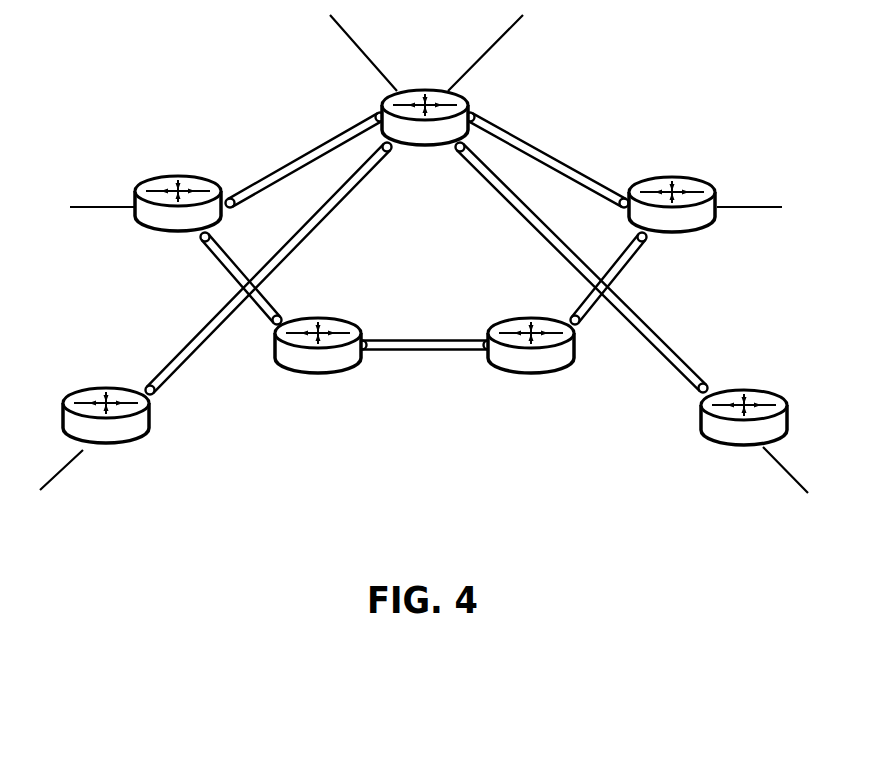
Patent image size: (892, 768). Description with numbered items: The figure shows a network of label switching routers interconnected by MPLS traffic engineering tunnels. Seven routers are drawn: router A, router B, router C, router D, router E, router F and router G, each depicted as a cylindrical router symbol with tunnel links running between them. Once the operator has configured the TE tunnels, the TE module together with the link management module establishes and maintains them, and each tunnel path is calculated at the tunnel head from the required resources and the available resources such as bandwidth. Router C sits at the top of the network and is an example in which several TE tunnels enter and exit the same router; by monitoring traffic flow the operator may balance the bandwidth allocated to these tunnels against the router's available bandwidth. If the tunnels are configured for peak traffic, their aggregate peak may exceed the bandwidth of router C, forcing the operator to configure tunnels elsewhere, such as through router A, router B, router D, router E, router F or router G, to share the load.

The router A is at (178, 182).
The router B is at (106, 394).
The router C is at (425, 93).
The router D is at (318, 323).
The router E is at (531, 323).
The router F is at (672, 183).
The router G is at (744, 395).